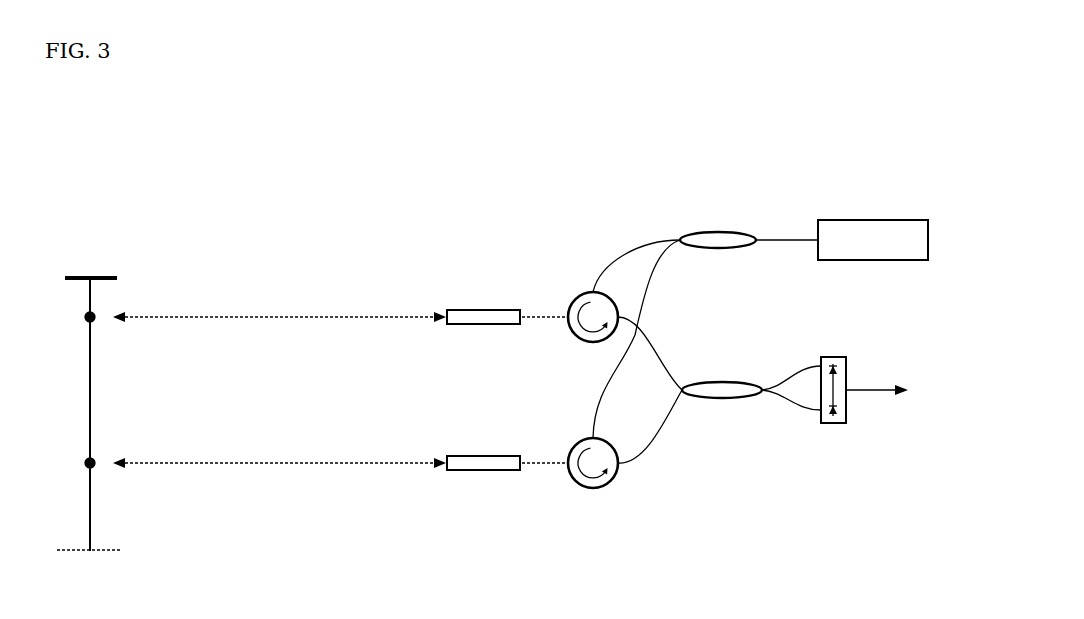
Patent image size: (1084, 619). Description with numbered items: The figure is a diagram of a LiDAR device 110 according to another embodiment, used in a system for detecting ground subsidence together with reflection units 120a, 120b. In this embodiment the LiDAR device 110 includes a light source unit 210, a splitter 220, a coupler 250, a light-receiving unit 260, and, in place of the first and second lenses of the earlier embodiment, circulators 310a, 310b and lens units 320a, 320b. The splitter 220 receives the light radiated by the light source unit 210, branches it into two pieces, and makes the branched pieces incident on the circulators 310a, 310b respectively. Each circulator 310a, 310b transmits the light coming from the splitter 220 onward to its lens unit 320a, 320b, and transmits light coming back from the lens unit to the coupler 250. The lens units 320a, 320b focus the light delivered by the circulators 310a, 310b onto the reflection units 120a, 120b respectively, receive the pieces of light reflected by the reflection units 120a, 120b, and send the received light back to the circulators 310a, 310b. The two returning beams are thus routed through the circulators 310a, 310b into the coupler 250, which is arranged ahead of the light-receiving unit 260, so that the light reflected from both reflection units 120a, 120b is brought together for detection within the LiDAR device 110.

The LiDAR device 110 is at (525, 118).
The reflection unit 120a is at (94, 316).
The reflection unit 120b is at (92, 467).
The light source unit 210 is at (870, 218).
The splitter 220 is at (718, 238).
The coupler 250 is at (723, 393).
The light-receiving unit 260 is at (838, 425).
The circulator 310a is at (575, 295).
The circulator 310b is at (575, 441).
The lens unit 320a is at (490, 310).
The lens unit 320b is at (490, 457).